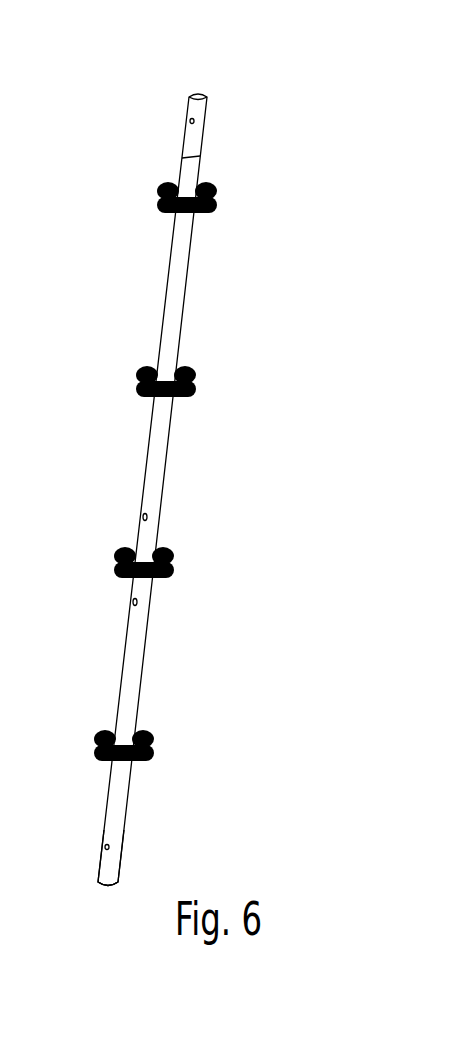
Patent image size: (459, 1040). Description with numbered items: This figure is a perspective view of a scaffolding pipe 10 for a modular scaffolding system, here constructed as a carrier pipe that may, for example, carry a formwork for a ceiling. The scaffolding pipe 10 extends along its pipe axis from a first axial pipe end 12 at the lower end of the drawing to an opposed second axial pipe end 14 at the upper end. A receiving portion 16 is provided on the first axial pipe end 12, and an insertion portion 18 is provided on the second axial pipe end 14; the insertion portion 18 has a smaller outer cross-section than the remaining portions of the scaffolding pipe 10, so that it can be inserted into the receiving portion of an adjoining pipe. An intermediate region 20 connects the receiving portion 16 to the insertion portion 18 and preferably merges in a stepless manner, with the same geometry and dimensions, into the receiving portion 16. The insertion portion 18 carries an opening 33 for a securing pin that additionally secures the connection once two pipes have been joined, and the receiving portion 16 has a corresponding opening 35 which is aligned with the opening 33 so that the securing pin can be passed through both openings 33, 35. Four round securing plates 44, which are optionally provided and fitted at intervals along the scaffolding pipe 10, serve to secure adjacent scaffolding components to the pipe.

The scaffolding pipe 10 is at (97, 418).
The first axial pipe end 12 is at (98, 898).
The second axial pipe end 14 is at (193, 84).
The receiving portion 16 is at (123, 862).
The insertion portion 18 is at (205, 138).
The intermediate region 20 is at (157, 641).
The opening 33 is at (191, 120).
The opening 35 is at (105, 847).
The round securing plate 44 is at (197, 386).